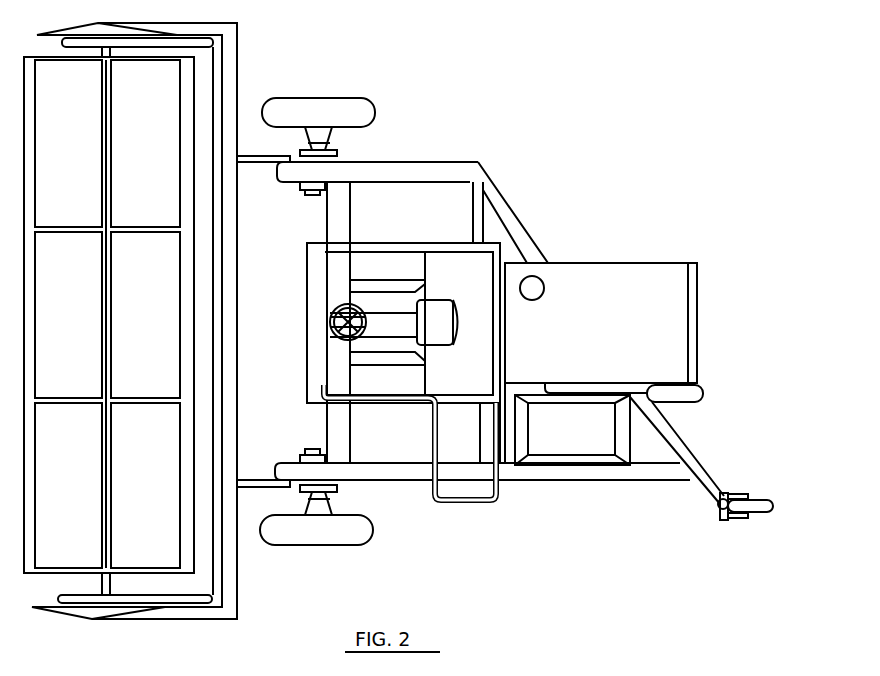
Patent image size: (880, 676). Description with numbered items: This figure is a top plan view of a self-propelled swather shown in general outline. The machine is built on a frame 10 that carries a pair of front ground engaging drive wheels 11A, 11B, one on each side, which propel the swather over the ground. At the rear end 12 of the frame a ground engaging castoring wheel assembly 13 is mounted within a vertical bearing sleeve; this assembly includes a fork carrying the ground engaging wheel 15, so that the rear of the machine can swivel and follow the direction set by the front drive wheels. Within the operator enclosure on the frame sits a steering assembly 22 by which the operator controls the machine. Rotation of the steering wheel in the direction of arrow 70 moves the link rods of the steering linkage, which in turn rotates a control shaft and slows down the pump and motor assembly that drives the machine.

The frame 10 is at (565, 263).
The front ground engaging drive wheel 11A is at (372, 540).
The front ground engaging drive wheel 11B is at (372, 104).
The rear end 12 is at (710, 485).
The ground engaging castoring wheel assembly 13 is at (740, 494).
The ground engaging wheel 15 is at (768, 512).
The steering assembly 22 is at (330, 327).
The arrow 70 is at (334, 309).